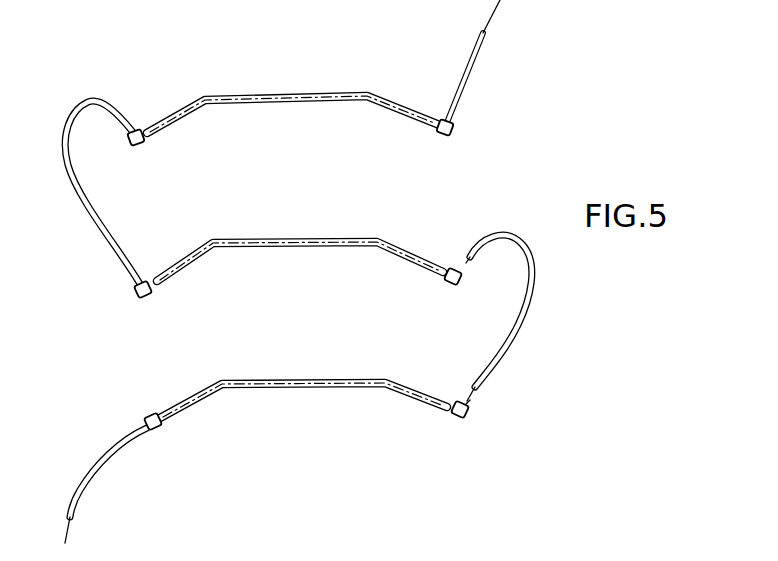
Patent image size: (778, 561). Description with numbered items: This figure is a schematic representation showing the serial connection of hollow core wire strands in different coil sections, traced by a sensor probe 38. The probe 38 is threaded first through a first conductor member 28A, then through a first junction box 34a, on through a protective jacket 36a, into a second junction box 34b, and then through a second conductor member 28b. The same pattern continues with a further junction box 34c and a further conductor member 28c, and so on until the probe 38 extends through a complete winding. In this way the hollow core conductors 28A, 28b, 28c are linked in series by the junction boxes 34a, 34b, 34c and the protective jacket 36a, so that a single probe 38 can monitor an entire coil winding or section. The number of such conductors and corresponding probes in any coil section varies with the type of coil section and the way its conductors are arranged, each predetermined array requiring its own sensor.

The first conductor member 28A is at (288, 392).
The second conductor member 28b is at (280, 250).
The third tubular bar segment 28c is at (300, 93).
The first junction box 34a is at (158, 427).
The second junction box 34b is at (462, 418).
The coupling 34c is at (447, 283).
The protective jacket 36a is at (527, 296).
The sensor probe 38 is at (487, 30).